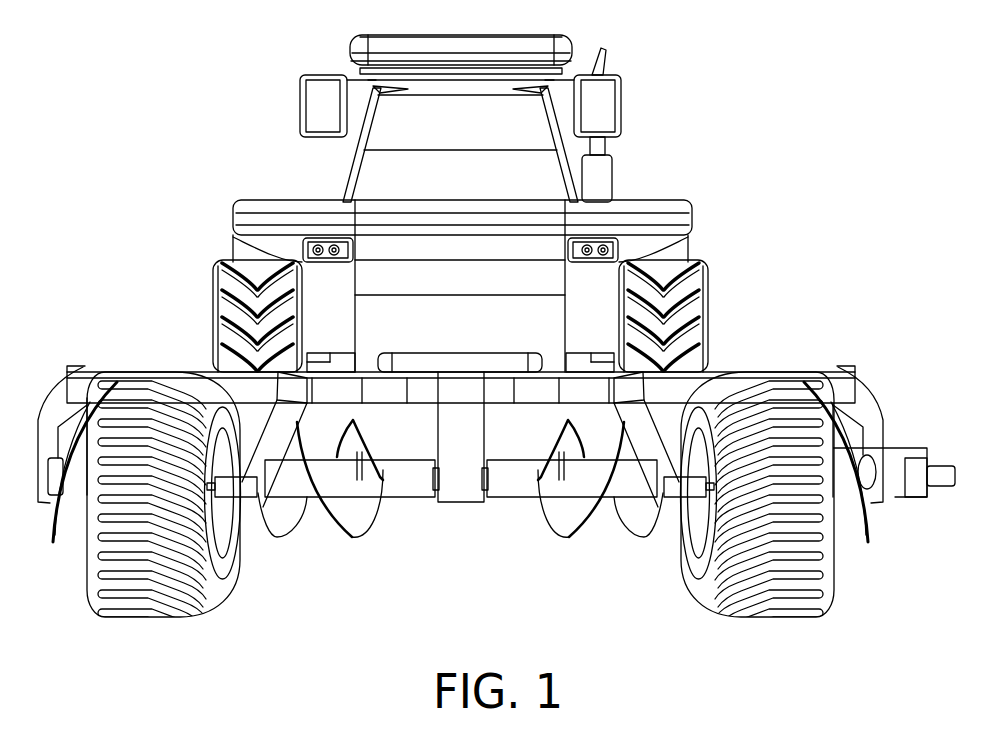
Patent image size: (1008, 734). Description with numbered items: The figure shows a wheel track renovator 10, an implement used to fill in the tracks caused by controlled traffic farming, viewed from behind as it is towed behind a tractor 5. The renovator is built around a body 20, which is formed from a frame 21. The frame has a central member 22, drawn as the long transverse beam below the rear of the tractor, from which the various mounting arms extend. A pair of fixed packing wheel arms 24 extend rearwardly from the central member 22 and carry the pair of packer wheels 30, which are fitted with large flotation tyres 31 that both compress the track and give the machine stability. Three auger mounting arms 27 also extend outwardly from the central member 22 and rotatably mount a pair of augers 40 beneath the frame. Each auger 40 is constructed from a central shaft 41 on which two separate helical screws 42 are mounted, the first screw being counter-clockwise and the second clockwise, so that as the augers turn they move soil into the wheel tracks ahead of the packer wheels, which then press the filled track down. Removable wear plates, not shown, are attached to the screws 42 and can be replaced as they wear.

The wheel track renovator 10 is at (727, 56).
The tractor 5 is at (650, 217).
The body 20 is at (862, 370).
The frame 21 is at (882, 418).
The central member 22 is at (682, 387).
The fixed packing wheel arms 24 is at (275, 534).
The auger mounting arms 27 is at (460, 408).
The packer wheels 30 is at (767, 585).
The flotation tyres 31 is at (817, 583).
The augers 40 is at (394, 486).
The central shaft 41 is at (420, 488).
The helical screws 42 is at (352, 526).